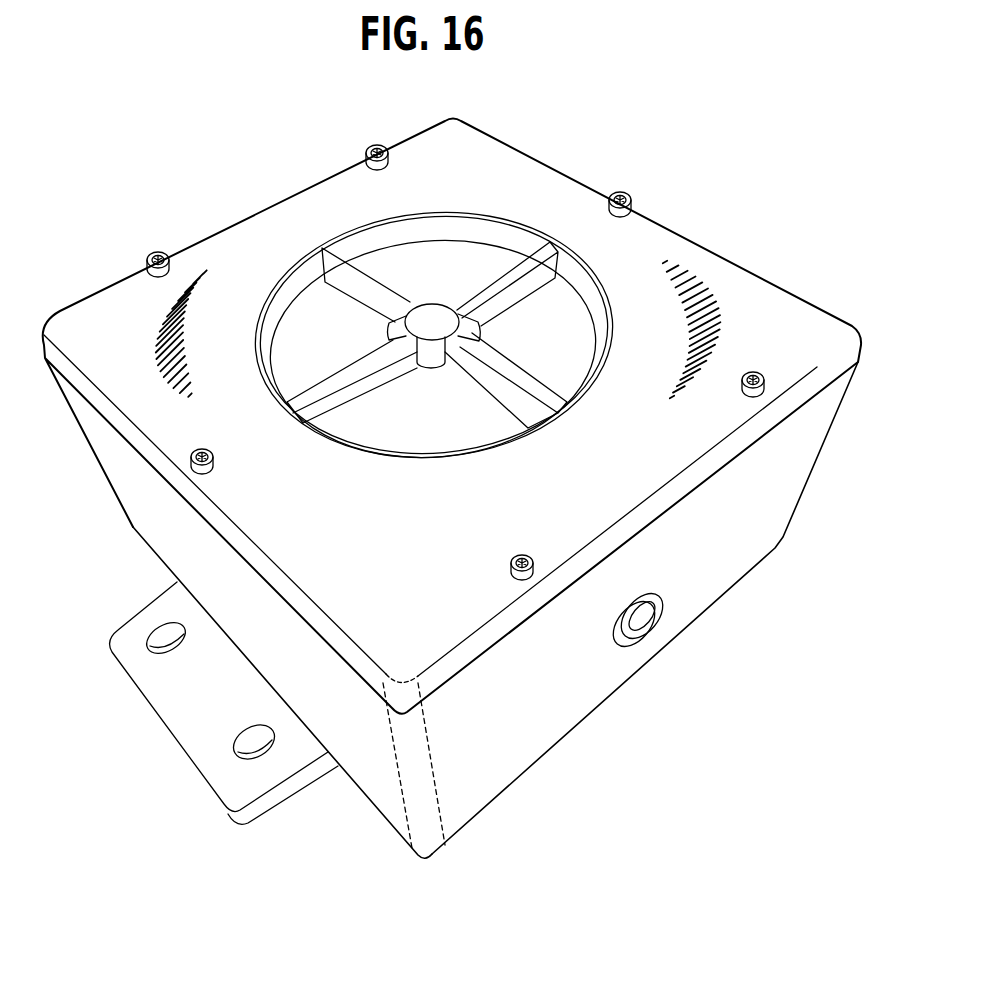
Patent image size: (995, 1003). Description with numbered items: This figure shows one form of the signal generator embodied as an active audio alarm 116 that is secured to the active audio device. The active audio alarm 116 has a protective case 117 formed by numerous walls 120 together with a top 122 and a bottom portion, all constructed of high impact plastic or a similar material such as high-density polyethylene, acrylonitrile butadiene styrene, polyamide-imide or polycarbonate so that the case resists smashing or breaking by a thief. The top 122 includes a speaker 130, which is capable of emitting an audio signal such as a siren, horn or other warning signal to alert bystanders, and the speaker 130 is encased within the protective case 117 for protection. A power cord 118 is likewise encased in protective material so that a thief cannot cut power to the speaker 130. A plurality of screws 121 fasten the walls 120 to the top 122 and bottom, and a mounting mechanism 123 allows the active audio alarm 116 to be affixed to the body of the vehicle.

The active audio alarm 116 is at (645, 200).
The protective case 117 is at (723, 543).
The power cord 118 is at (163, 247).
The walls 120 is at (368, 755).
The screws 121 is at (225, 466).
The top 122 is at (633, 354).
The mounting mechanism 123 is at (158, 746).
The speaker 130 is at (248, 323).